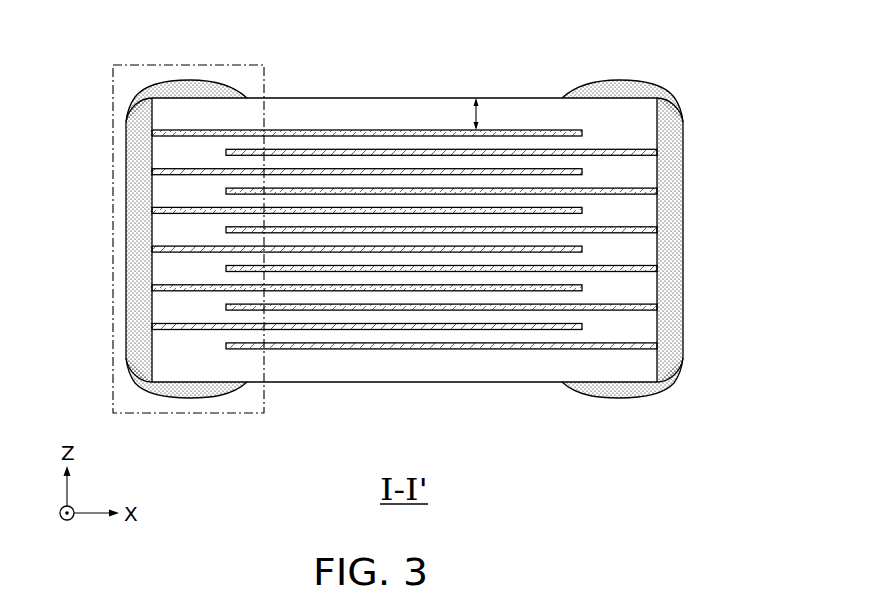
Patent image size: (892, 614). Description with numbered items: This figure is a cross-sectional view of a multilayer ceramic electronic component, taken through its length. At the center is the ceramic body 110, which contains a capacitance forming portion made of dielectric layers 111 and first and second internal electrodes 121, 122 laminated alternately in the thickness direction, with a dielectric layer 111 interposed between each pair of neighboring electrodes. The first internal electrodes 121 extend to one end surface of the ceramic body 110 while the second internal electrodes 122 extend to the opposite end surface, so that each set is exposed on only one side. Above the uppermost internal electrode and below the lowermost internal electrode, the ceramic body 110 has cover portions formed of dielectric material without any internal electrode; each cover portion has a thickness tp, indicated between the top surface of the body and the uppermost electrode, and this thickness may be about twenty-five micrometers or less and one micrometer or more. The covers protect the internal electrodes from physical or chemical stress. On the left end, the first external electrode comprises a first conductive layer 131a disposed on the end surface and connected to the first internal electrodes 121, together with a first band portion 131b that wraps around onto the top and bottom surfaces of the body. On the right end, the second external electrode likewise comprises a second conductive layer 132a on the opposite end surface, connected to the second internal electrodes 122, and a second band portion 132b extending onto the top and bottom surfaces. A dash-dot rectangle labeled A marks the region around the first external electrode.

The ceramic body 110 is at (407, 97).
The dielectric layer 111 is at (485, 335).
The first internal electrode 121 is at (335, 328).
The second internal electrode 122 is at (380, 345).
The first conductive layer 131a is at (136, 232).
The first band portion 131b is at (186, 80).
The second conductive layer 132a is at (672, 232).
The second band portion 132b is at (620, 82).
The region A is at (112, 126).
The thickness of cover portion tp is at (468, 96).